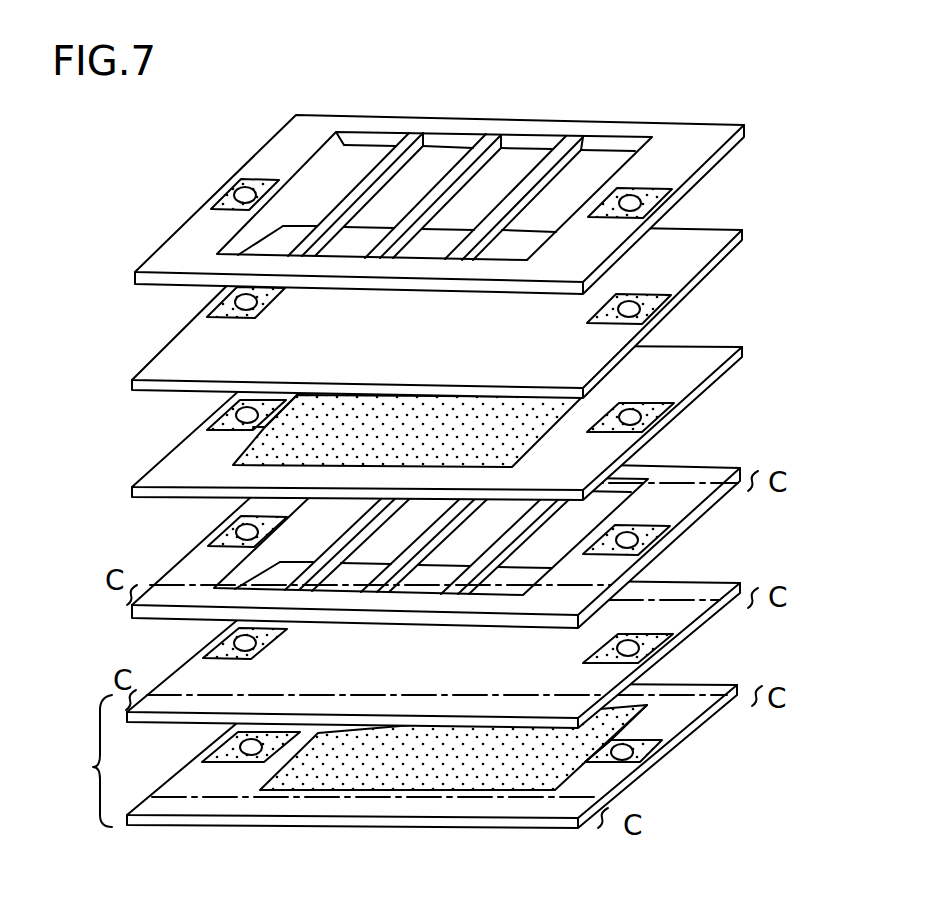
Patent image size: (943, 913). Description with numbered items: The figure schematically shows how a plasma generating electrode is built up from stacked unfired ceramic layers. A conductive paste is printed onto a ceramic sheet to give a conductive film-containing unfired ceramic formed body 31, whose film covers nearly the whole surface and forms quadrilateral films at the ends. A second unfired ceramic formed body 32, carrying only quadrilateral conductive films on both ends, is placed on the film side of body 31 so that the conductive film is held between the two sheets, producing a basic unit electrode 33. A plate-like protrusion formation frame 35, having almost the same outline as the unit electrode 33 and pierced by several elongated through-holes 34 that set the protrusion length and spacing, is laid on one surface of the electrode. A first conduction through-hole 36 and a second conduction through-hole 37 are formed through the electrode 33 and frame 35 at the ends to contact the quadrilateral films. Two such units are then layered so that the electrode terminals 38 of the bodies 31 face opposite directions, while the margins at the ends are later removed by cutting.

The conductive film-containing unfired ceramic formed body 31 is at (715, 380).
The unfired ceramic formed body 32 is at (710, 278).
The basic unit electrode 33 is at (112, 761).
The through-hole 34 is at (645, 462).
The protrusion formation frame 35 is at (444, 371).
The first conduction through-hole 36 is at (220, 533).
The second conduction through-hole 37 is at (640, 547).
The electrode terminal 38 is at (223, 431).